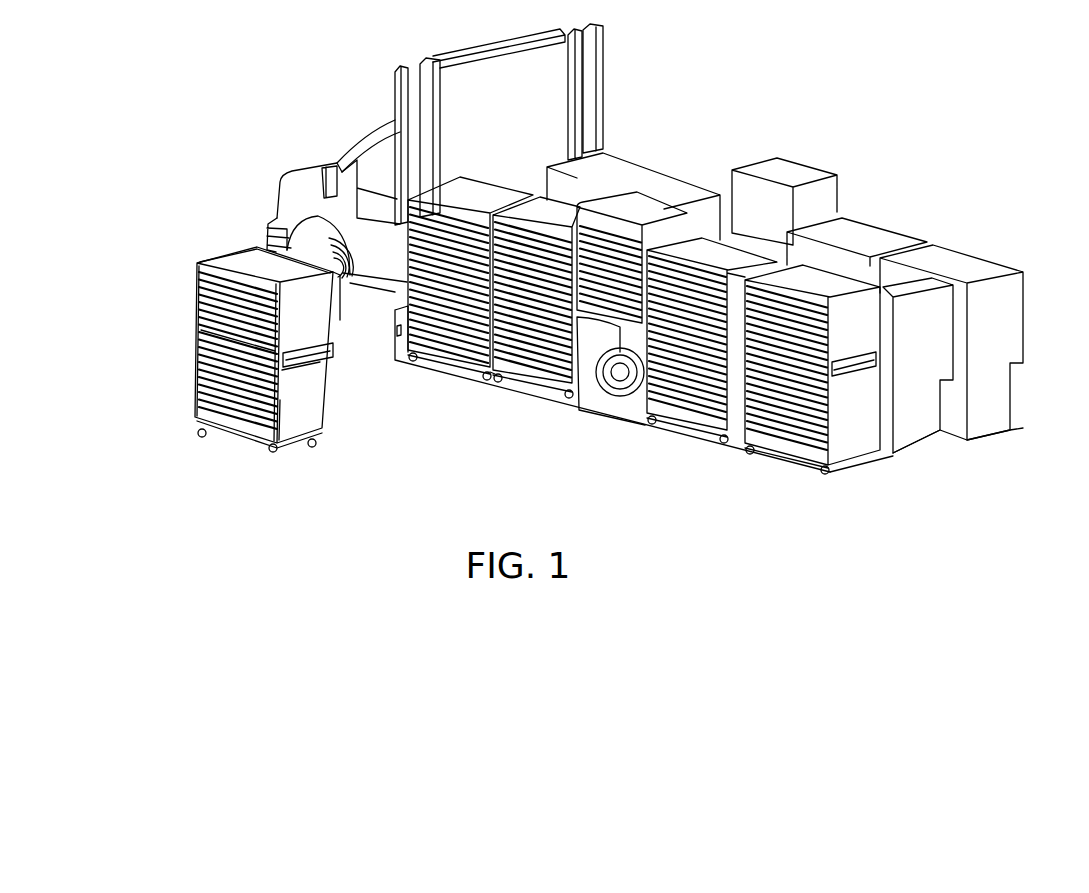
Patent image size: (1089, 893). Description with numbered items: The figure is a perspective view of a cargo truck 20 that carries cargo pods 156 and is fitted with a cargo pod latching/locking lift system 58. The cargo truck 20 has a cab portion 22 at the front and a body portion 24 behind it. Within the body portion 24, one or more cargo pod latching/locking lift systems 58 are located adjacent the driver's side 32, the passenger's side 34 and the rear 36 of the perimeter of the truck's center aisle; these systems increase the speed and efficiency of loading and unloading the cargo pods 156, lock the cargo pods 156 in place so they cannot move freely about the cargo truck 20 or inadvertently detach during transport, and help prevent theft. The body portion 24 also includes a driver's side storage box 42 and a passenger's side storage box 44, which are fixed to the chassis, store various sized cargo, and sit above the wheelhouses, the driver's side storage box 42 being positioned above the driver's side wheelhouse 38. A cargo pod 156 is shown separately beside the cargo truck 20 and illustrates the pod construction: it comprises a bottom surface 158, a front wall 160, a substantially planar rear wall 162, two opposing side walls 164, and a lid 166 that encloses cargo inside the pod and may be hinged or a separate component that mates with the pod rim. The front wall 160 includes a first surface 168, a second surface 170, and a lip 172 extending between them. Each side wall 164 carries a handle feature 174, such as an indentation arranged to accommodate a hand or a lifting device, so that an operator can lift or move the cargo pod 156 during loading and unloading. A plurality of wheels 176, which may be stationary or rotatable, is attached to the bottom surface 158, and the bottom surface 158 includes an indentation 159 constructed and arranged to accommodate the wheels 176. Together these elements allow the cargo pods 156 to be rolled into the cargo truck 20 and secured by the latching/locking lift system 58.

The cargo truck 20 is at (338, 88).
The cab portion 22 is at (303, 188).
The body portion 24 is at (701, 157).
The driver's side 32 is at (488, 395).
The passenger's side 34 is at (872, 192).
The rear 36 is at (938, 488).
The driver's side wheelhouse 38 is at (593, 350).
The driver's side storage box 42 is at (640, 213).
The passenger's side storage box 44 is at (793, 174).
The cargo pod latching/locking lift system 58 is at (390, 343).
The cargo pod 156 is at (218, 375).
The bottom surface 158 is at (233, 443).
The indentation 159 is at (272, 453).
The front wall 160 is at (340, 320).
The rear wall 162 is at (212, 331).
The side wall 164 is at (197, 300).
The lid 166 is at (250, 262).
The first surface 168 is at (336, 358).
The second surface 170 is at (323, 417).
The lip 172 is at (340, 372).
The handle feature 174 is at (278, 367).
The wheels 176 is at (200, 437).